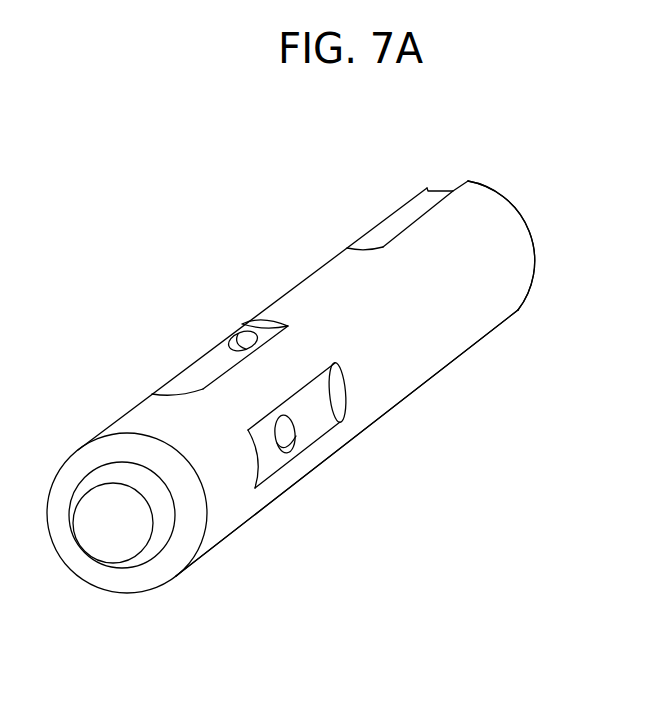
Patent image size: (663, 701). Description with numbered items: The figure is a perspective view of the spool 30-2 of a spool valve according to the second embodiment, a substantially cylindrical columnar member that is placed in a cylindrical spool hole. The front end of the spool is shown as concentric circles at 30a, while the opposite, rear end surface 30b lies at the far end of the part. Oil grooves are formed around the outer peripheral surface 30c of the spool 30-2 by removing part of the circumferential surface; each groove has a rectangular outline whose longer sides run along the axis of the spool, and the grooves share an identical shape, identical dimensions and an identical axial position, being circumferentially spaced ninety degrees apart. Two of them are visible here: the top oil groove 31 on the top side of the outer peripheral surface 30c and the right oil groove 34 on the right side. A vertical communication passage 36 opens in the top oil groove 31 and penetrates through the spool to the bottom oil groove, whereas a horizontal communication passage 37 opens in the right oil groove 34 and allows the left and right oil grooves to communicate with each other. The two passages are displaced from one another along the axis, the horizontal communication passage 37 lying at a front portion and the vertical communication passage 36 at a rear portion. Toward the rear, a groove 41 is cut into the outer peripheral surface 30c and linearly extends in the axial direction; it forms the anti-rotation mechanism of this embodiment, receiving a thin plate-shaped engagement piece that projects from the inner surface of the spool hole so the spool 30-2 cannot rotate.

The spool 30-2 is at (310, 264).
The front opening / bore 30a is at (128, 535).
The rear end surface 30b is at (507, 197).
The outer peripheral surface 30c is at (477, 297).
The top oil groove 31 is at (188, 379).
The right oil groove 34 is at (315, 425).
The vertical communication passage 36 is at (229, 334).
The horizontal communication passage 37 is at (297, 438).
The groove 41 is at (436, 202).